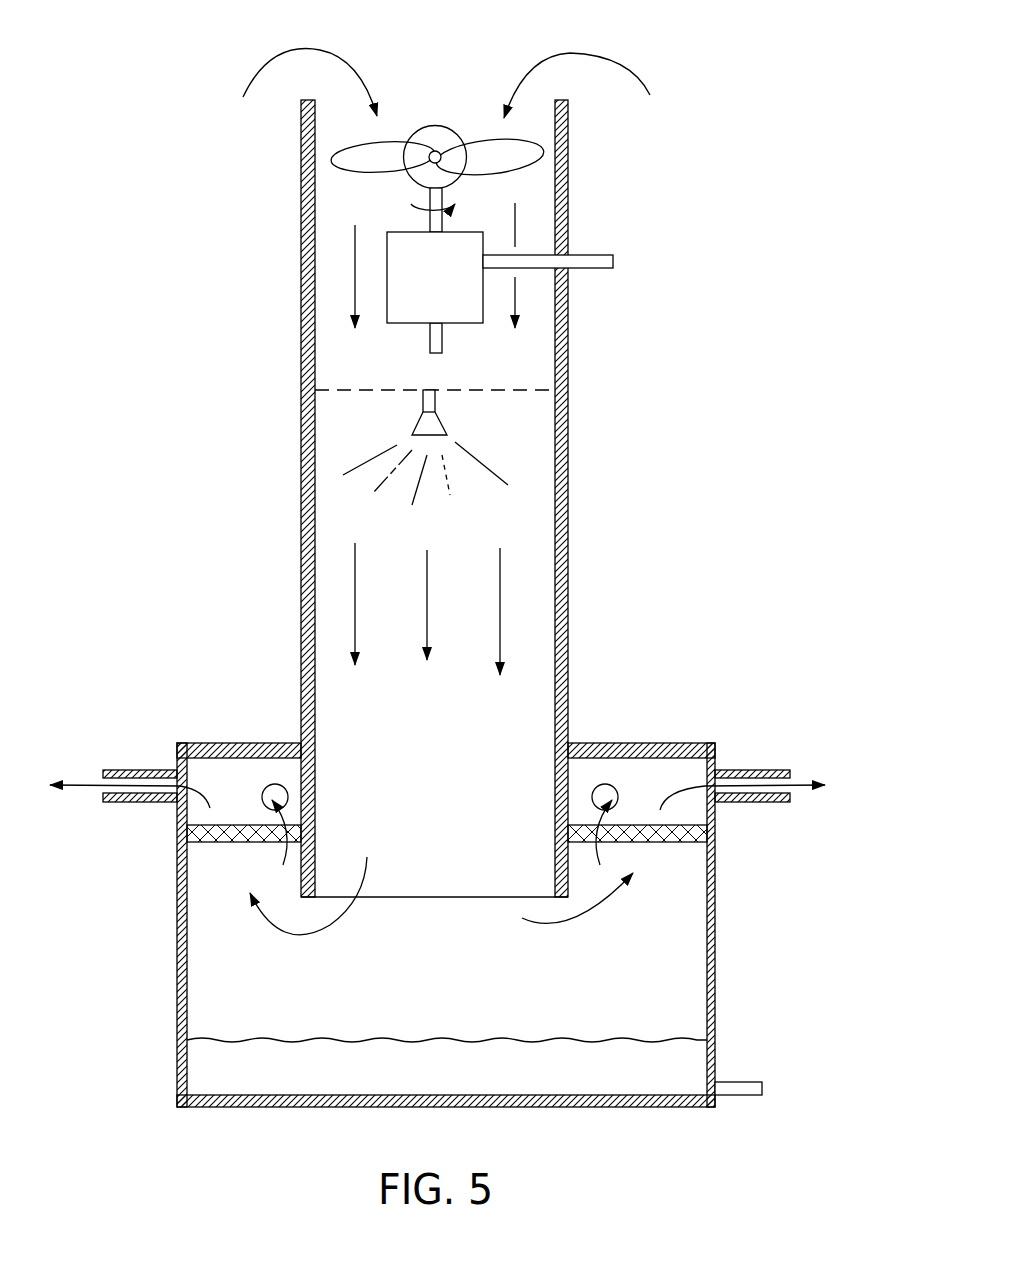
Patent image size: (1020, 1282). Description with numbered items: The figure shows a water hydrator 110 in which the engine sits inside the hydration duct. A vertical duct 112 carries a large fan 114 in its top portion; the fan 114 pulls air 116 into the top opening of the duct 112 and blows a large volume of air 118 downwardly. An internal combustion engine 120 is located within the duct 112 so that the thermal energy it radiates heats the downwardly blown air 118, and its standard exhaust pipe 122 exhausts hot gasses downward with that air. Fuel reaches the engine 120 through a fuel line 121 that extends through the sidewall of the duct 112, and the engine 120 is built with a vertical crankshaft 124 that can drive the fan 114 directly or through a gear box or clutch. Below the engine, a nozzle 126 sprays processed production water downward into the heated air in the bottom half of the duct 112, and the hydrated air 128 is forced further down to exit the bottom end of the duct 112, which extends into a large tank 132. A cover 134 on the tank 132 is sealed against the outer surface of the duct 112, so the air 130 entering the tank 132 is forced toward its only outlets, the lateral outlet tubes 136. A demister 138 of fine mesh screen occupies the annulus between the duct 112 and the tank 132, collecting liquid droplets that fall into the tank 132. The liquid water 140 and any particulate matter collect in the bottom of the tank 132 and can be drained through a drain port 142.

The water hydrator 110 is at (156, 55).
The duct 112 is at (301, 275).
The large fan 114 is at (542, 160).
The air pulled into duct 116 is at (612, 63).
The downwardly blown air 118 is at (517, 298).
The internal combustion engine 120 is at (407, 312).
The fuel line 121 is at (613, 255).
The exhaust pipe 122 is at (442, 343).
The vertical crankshaft 124 is at (412, 200).
The nozzle 126 is at (443, 418).
The hydrated air 128 is at (357, 552).
The air forced into tank 130 is at (320, 947).
The tank 132 is at (715, 937).
The cover 134 is at (620, 745).
The outlet tubes 136 is at (272, 784).
The demister 138 is at (232, 842).
The liquid water 140 is at (463, 1038).
The drain port 142 is at (745, 1078).